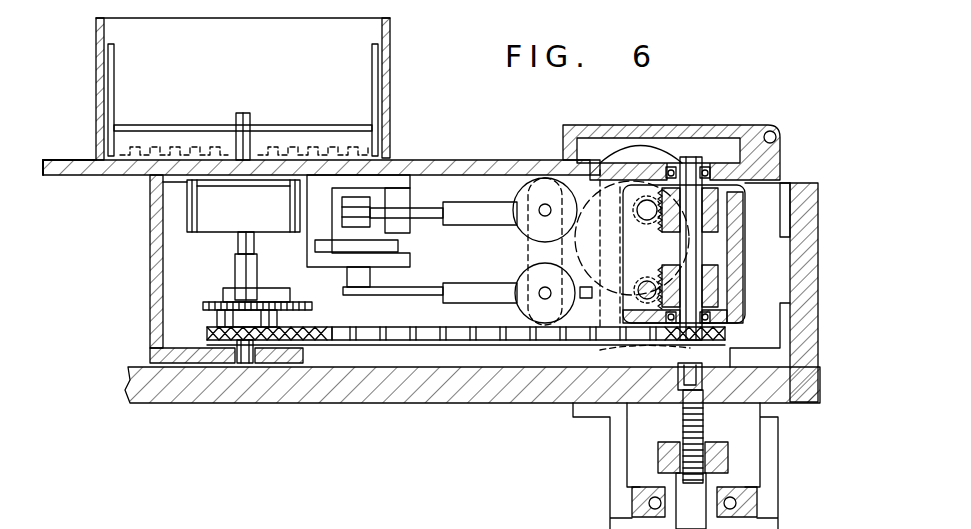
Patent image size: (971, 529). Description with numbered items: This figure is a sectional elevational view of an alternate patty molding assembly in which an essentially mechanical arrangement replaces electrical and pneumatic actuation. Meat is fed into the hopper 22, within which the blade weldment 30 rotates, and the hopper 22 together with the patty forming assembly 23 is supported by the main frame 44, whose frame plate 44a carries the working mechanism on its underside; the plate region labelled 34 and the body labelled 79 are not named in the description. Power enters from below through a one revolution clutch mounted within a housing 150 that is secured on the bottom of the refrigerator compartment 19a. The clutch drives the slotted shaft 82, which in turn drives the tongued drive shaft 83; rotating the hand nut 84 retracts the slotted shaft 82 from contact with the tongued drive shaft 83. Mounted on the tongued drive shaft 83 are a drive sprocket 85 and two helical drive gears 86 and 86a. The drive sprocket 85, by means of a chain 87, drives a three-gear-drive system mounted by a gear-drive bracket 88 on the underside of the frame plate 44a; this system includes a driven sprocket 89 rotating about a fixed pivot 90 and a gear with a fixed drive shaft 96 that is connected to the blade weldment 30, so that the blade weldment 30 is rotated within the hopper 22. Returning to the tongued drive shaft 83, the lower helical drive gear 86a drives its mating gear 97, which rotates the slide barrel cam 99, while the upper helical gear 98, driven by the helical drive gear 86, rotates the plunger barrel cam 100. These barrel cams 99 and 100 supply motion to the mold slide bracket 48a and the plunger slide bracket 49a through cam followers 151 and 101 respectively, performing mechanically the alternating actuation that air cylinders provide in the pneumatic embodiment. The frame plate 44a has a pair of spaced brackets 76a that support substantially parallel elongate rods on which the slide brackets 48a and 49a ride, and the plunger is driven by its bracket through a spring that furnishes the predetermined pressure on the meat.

The hopper 22 is at (389, 59).
The blade weldment 30 is at (294, 117).
The tray 34 is at (80, 160).
The main frame 44 is at (433, 166).
The frame plate 44a is at (42, 176).
The body 79 is at (498, 157).
The spaced brackets 76a is at (540, 192).
The plunger barrel cam 100 is at (655, 147).
The patty forming assembly 23 is at (416, 243).
The plunger slide bracket 49a is at (487, 218).
The mold slide bracket 48a is at (484, 292).
The upper helical gear 98 is at (637, 222).
The cam follower 101 is at (577, 232).
The tongued drive shaft 83 is at (690, 243).
The helical drive gear 86 is at (720, 212).
The lower helical drive gear 86a is at (720, 270).
The fixed drive shaft 96 is at (237, 268).
The mating gear 97 is at (638, 293).
The driven sprocket 89 is at (210, 333).
The chain 87 is at (432, 345).
The cam follower 151 is at (578, 300).
The slide barrel cam 99 is at (665, 352).
The drive sprocket 85 is at (722, 335).
The gear-drive bracket 88 is at (178, 356).
The fixed pivot 90 is at (245, 362).
The refrigerator compartment bottom 19a is at (428, 396).
The slotted shaft 82 is at (703, 418).
The hand nut 84 is at (729, 456).
The housing 150 is at (612, 463).